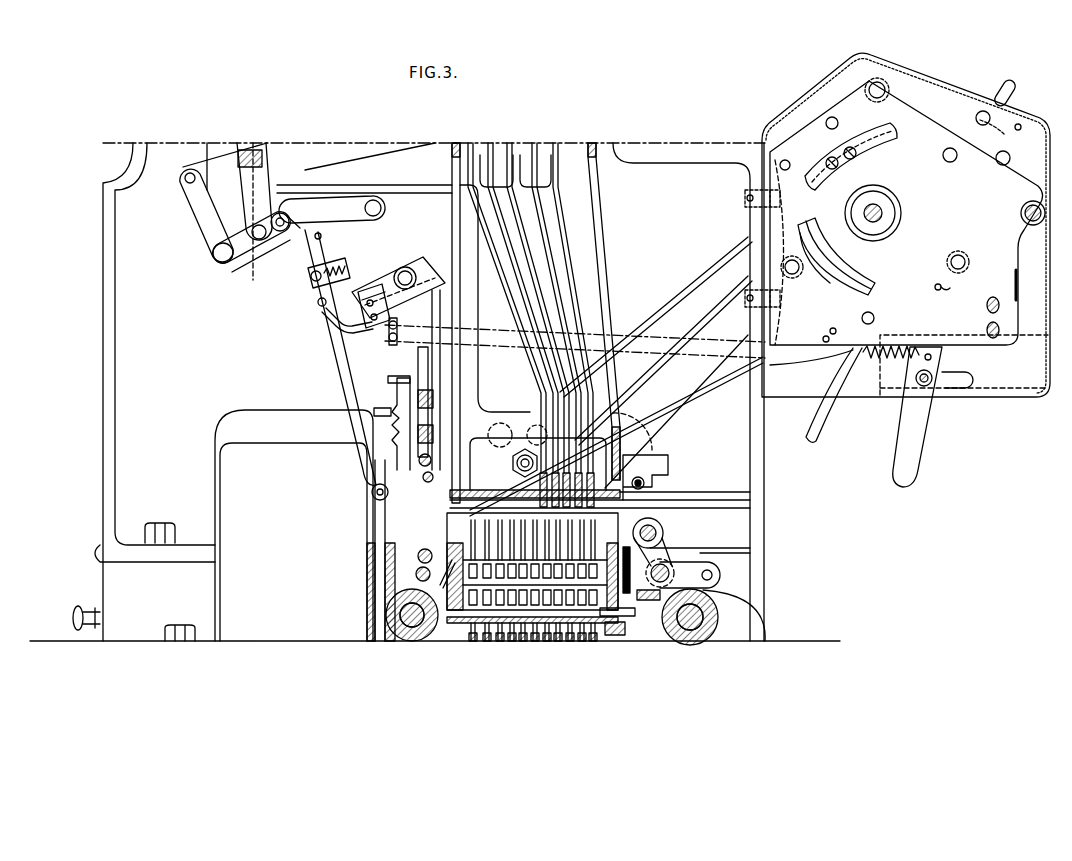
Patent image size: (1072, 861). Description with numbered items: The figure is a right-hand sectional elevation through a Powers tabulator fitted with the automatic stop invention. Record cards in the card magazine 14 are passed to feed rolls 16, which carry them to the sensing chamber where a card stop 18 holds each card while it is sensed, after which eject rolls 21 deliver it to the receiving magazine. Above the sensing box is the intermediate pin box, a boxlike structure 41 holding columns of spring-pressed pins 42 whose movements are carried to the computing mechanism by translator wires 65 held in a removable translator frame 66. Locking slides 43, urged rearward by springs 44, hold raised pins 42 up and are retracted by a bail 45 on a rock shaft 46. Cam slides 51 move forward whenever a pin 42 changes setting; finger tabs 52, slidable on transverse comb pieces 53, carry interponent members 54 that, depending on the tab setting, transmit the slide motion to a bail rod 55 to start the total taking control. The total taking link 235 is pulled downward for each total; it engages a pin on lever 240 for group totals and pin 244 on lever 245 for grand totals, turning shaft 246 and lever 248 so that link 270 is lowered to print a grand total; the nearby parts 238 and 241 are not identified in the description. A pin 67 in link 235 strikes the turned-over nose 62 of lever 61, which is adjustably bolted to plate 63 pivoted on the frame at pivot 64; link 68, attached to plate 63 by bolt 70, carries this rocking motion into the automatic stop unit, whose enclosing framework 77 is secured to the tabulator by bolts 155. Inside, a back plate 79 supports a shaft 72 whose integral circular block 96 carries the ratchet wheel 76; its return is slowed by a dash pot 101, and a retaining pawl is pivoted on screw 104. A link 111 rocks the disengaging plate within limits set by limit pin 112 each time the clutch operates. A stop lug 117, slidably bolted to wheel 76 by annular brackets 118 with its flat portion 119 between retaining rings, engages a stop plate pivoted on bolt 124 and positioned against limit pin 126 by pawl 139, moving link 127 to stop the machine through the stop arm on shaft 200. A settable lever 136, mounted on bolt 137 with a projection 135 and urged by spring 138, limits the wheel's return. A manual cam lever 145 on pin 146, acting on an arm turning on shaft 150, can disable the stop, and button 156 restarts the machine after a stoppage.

The card magazine 14 is at (284, 541).
The feed rolls 16 is at (366, 628).
The card stop 18 is at (624, 629).
The eject rolls 21 is at (718, 621).
The boxlike structure 41 is at (622, 523).
The spring-pressed pins 42 is at (461, 492).
The locking slide 43 is at (625, 613).
The springs 44 is at (631, 574).
The bail 45 is at (641, 597).
The rock shaft 46 is at (661, 534).
The cam slides 51 is at (450, 562).
The finger tabs 52 is at (398, 382).
The transverse comb pieces 53 is at (435, 398).
The interponent member 54 is at (419, 554).
The bail rod 55 is at (417, 576).
The lever 61 is at (368, 324).
The turned-over nose 62 is at (324, 312).
The plate 63 is at (383, 280).
The pivot 64 is at (421, 272).
The translator wires 65 is at (550, 253).
The translator frame 66 is at (451, 233).
The pin 67 is at (318, 303).
The link 68 is at (597, 251).
The bolt 70 is at (400, 330).
The shaft 72 is at (883, 213).
The ratchet wheel 76 is at (830, 287).
The enclosing framework 77 is at (1040, 398).
The back plate 79 is at (1018, 288).
The circular block 96 is at (890, 224).
The dash pot 101 is at (1022, 306).
The screw 104 is at (826, 121).
The link 111 is at (712, 268).
The limit pin 112 is at (950, 163).
The stop lug 117 is at (816, 173).
The annular brackets 118 is at (857, 269).
The flat portion 119 is at (870, 150).
The bolt 124 is at (874, 319).
The limit pin 126 is at (834, 328).
The link 127 is at (677, 402).
The projection 135 is at (343, 270).
The settable lever 136 is at (920, 449).
The bolt 137 is at (951, 289).
The spring 138 is at (892, 358).
The pawl 139 is at (808, 425).
The cam lever 145 is at (1000, 88).
The pin 146 is at (983, 126).
The shaft 150 is at (1003, 166).
The bolts 155 is at (769, 252).
The button 156 is at (73, 615).
The shaft 200 is at (510, 440).
The total taking link 235 is at (330, 338).
The link 238 is at (380, 216).
The lever 240 is at (321, 236).
The link 241 is at (290, 234).
The pin 244 is at (267, 253).
The lever 245 is at (243, 263).
The shaft 246 is at (216, 259).
The lever 248 is at (197, 220).
The link 270 is at (246, 207).